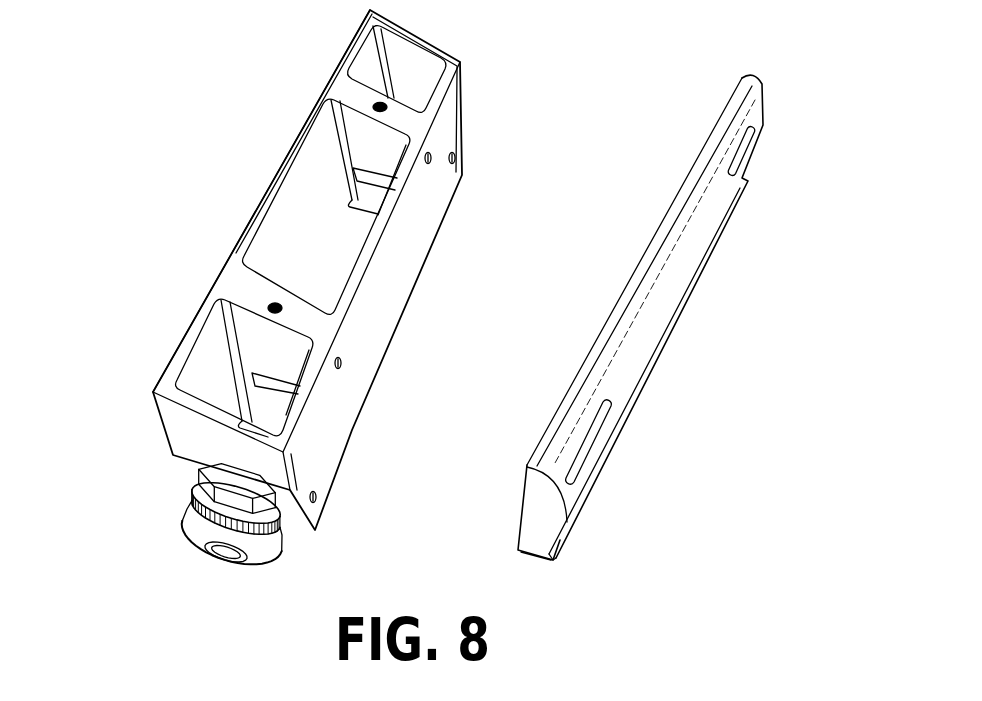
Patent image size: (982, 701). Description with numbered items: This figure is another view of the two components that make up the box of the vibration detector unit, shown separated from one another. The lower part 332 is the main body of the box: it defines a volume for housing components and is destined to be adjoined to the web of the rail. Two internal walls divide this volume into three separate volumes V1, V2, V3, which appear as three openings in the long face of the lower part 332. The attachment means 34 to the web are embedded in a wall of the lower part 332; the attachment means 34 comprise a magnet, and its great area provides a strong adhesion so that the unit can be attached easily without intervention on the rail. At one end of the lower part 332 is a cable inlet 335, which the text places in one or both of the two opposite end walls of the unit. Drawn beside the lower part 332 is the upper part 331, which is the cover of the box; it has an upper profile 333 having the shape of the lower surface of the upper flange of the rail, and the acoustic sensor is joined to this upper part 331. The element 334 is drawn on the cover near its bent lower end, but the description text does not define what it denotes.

The attachment means 34 is at (362, 333).
The lower part 332 is at (262, 213).
The first separate volume V1 is at (208, 367).
The second separate volume V2 is at (352, 233).
The third separate volume V3 is at (400, 72).
The cable inlet 335 is at (223, 517).
The upper part 331 is at (642, 340).
The bent end portion 334 is at (525, 510).
The upper profile 333 is at (578, 527).